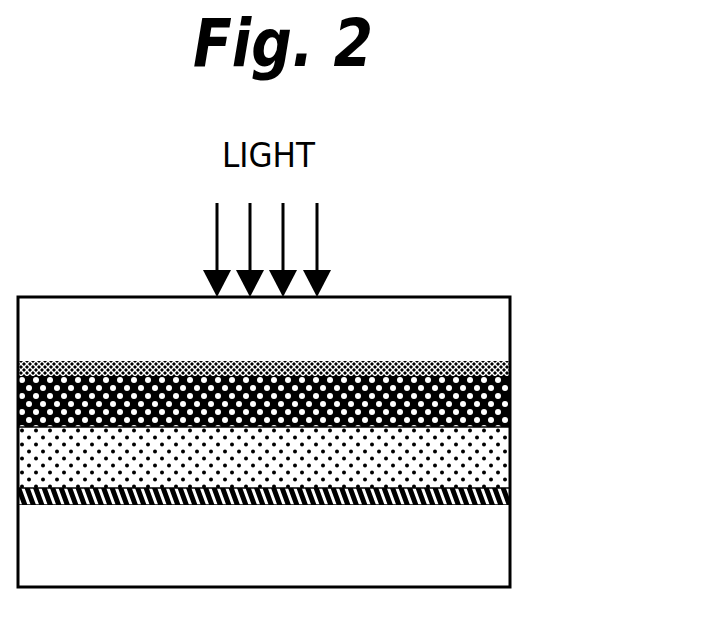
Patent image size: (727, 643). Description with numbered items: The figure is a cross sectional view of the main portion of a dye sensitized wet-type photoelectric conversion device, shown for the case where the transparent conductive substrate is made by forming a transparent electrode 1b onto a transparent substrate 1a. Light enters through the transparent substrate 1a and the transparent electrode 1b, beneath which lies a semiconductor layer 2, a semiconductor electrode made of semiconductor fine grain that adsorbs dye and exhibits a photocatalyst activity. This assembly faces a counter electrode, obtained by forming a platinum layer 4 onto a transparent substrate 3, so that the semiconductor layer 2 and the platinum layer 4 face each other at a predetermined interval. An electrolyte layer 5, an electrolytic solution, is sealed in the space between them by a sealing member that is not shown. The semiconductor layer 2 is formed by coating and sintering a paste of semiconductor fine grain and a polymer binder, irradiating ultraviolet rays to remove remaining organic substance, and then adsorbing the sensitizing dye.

The transparent substrate 1a is at (495, 328).
The transparent electrode 1b is at (510, 370).
The semiconductor layer 2 is at (510, 397).
The electrolyte layer 5 is at (495, 462).
The platinum layer 4 is at (510, 498).
The transparent substrate 3 is at (495, 557).